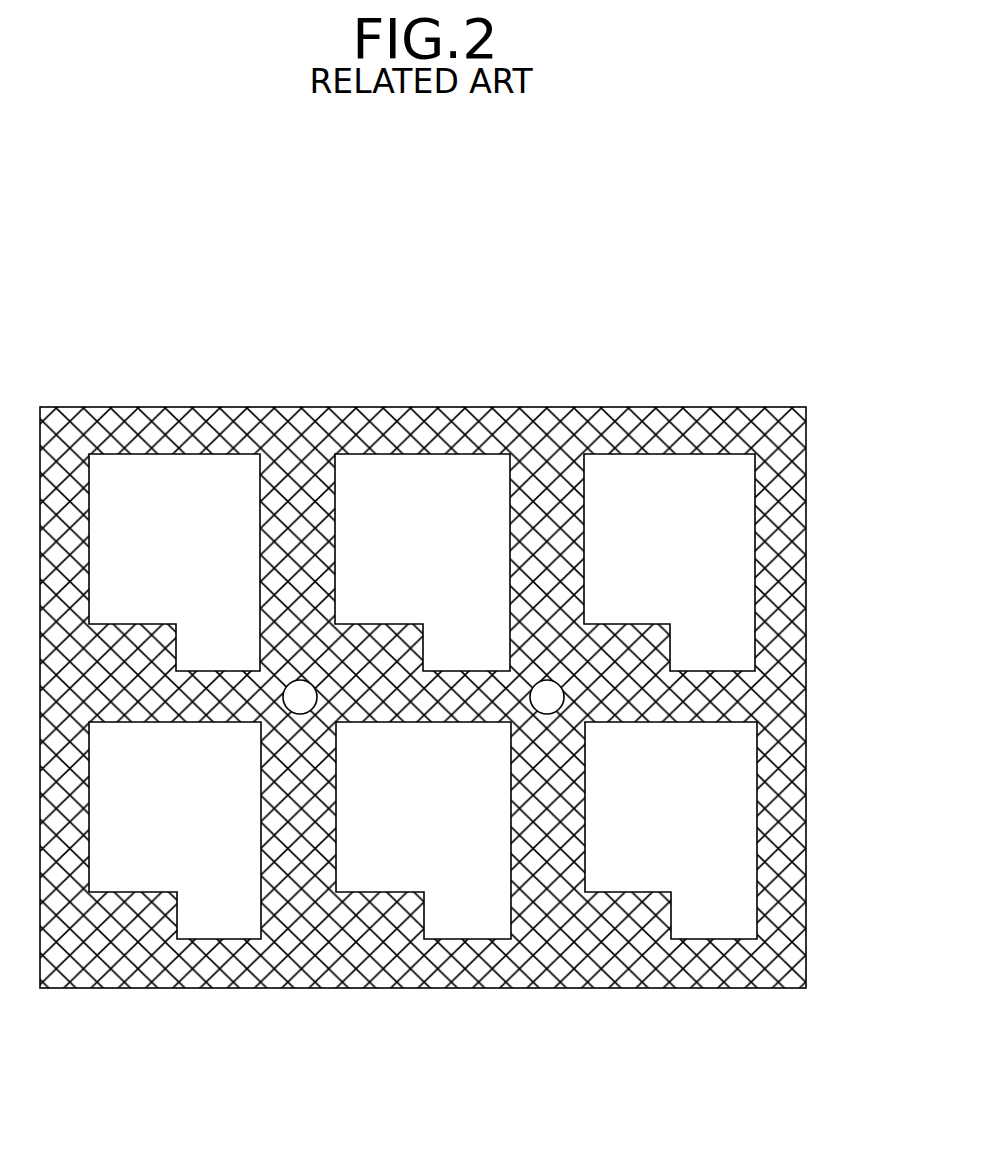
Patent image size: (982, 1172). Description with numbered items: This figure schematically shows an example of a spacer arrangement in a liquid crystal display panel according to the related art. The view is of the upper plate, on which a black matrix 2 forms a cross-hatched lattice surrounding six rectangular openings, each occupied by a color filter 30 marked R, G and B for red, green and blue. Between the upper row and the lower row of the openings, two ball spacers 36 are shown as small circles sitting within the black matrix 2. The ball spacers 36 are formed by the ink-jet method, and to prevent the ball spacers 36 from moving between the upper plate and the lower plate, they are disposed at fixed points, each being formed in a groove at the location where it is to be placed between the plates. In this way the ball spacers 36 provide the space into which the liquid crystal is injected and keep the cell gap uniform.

The black matrix 2 is at (806, 843).
The color filter 30 is at (743, 572).
The ball spacer 36 is at (560, 688).